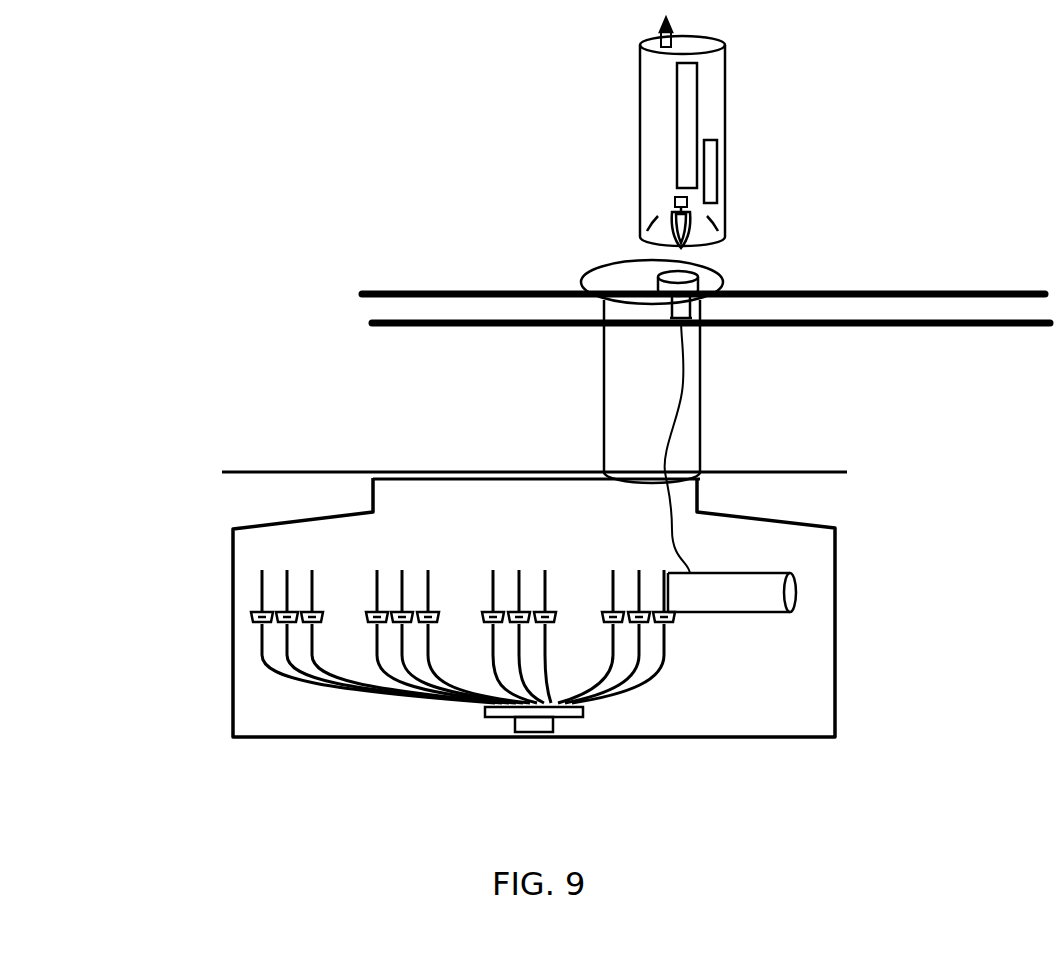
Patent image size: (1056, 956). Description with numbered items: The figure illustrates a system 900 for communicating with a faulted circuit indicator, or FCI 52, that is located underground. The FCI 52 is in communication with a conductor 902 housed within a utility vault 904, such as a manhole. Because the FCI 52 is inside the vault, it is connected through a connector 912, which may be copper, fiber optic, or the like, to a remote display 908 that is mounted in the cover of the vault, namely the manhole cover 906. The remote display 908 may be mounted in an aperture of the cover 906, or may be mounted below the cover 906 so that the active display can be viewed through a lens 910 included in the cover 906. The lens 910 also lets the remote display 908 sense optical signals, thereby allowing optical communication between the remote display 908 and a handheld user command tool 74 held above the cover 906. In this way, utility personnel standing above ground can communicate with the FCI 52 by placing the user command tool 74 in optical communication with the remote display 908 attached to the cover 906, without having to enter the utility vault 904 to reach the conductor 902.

The system 900 is at (307, 58).
The user command tool 74 is at (641, 98).
The manhole cover 906 is at (584, 277).
The remote display 908 is at (700, 318).
The lens 910 is at (700, 287).
The connector 912 is at (680, 393).
The utility vault 904 is at (233, 553).
The conductor 902 is at (668, 577).
The FCI 52 is at (745, 612).